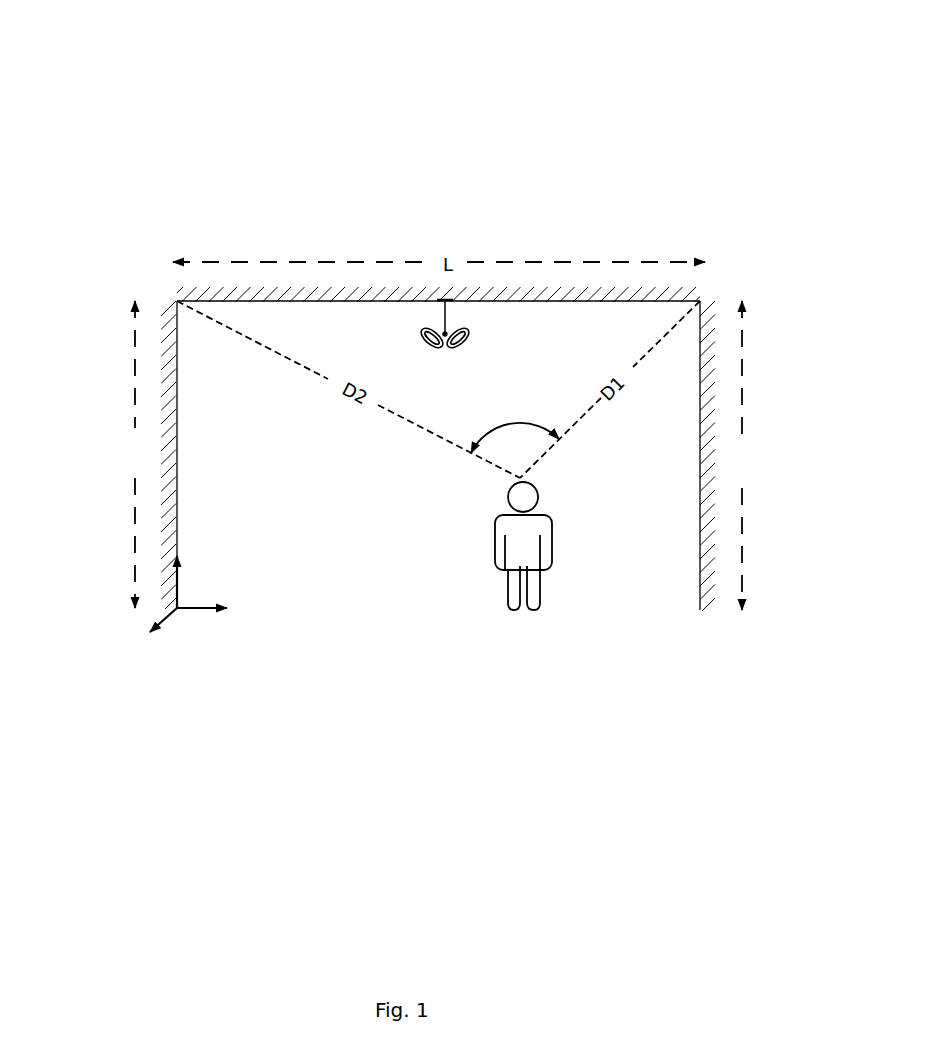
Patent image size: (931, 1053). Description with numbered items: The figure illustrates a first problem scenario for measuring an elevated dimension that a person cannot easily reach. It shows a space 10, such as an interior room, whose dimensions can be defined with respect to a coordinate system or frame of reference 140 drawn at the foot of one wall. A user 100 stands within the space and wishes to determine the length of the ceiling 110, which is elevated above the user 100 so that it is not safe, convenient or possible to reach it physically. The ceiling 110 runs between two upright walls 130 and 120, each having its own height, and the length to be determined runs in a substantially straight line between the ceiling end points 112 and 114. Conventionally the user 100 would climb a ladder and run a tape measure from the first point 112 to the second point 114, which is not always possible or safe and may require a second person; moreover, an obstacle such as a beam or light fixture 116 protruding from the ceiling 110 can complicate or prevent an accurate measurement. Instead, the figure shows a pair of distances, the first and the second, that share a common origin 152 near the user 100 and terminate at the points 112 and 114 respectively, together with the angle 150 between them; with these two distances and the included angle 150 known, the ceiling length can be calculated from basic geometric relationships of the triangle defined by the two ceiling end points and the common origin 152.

The space 10 is at (187, 70).
The user 100 is at (513, 612).
The ceiling 110 is at (277, 288).
The first point 112 is at (703, 298).
The second point 114 is at (173, 298).
The light fixture 116 is at (408, 325).
The upright wall 120 is at (710, 377).
The upright wall 130 is at (163, 378).
The coordinate system 140 is at (182, 612).
The angle 150 is at (488, 430).
The common origin 152 is at (522, 479).